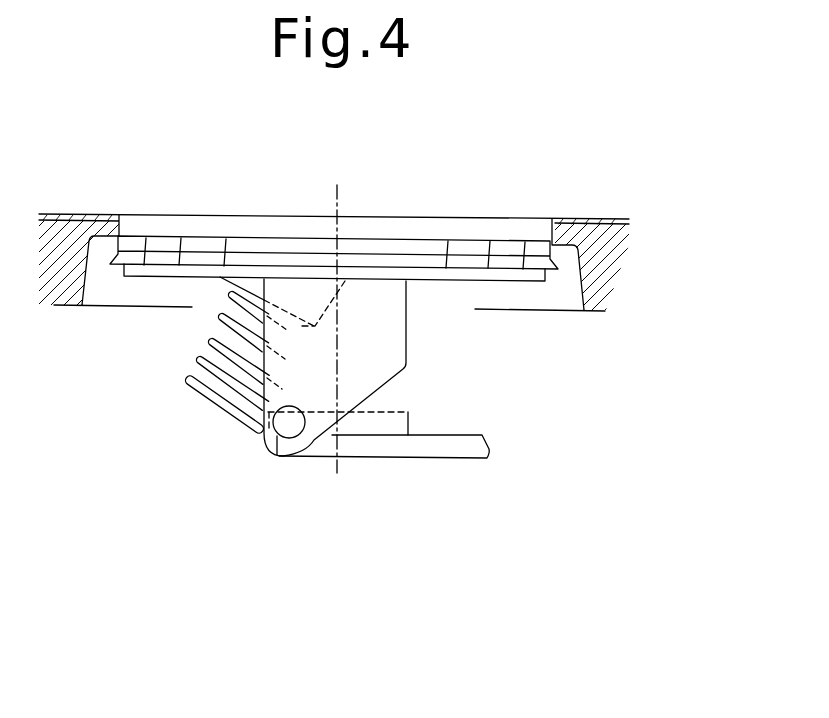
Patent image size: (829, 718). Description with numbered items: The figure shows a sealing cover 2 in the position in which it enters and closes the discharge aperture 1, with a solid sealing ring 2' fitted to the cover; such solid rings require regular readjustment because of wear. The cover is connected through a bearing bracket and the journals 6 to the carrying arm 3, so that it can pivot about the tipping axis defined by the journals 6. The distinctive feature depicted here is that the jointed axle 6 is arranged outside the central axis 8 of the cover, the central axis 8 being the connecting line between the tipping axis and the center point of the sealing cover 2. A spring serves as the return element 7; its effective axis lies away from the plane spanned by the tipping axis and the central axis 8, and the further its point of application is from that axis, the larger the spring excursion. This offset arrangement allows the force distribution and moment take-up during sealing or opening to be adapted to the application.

The discharge aperture 1 is at (174, 217).
The sealing cover 2 is at (334, 194).
The sealing ring 2' is at (345, 200).
The carrying arm 3 is at (451, 447).
The journal 6 is at (285, 421).
The return element 7 is at (213, 343).
The central axis 8 is at (334, 469).